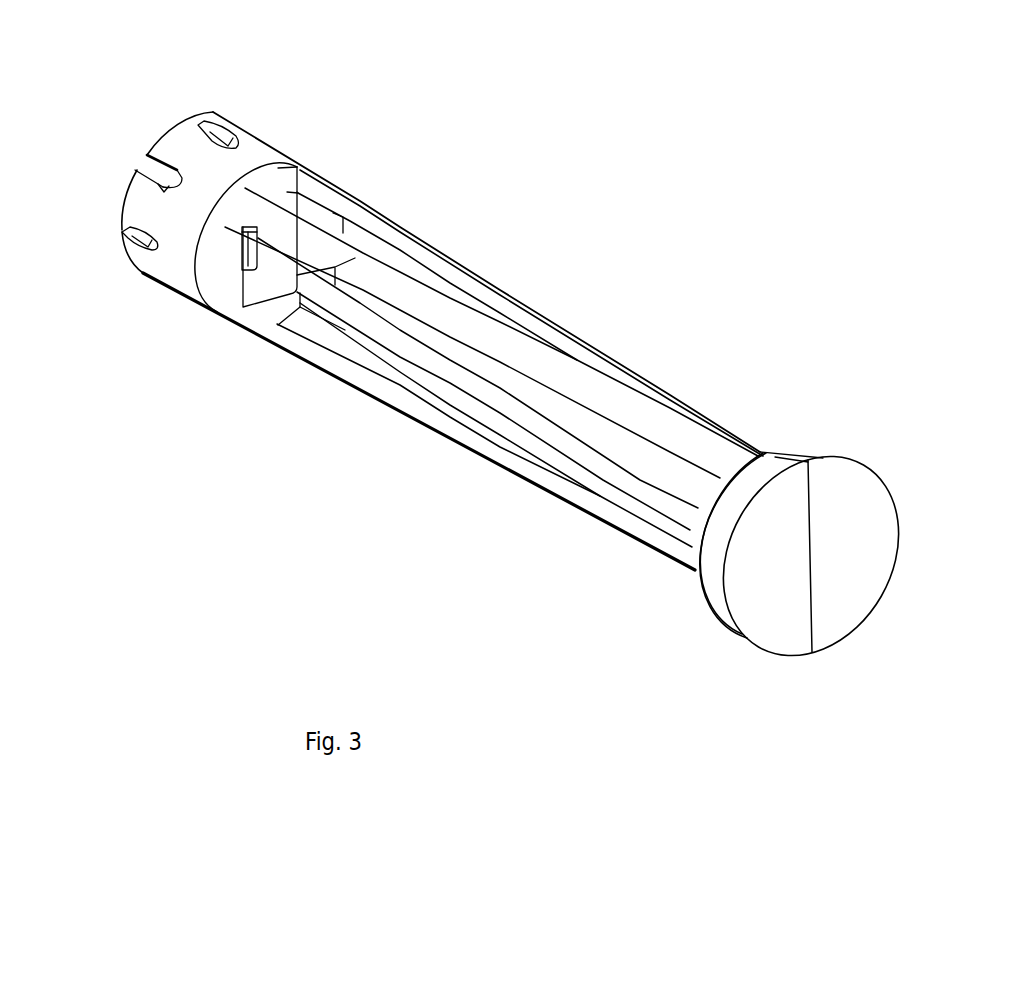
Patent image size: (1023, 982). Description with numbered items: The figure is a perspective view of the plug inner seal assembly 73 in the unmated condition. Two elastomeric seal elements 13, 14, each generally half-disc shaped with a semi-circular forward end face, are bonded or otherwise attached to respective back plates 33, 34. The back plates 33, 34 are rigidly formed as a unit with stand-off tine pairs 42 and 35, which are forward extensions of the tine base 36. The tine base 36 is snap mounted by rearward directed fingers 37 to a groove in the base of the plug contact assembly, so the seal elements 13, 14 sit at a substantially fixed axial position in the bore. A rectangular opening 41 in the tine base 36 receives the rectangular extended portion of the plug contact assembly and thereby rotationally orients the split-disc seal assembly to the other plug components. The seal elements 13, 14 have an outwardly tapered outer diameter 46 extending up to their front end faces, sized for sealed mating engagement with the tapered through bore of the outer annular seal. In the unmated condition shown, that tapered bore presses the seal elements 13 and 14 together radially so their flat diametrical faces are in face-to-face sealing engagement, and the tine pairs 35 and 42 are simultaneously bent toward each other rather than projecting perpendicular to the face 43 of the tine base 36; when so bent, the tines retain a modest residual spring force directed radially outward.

The seal element 13 is at (767, 580).
The seal element 14 is at (858, 563).
The back plate 33 is at (694, 526).
The back plate 34 is at (795, 452).
The stand-off tine pair 35 is at (367, 322).
The tine base 36 is at (258, 150).
The rearward directed fingers 37 is at (177, 147).
The rectangular opening 41 is at (245, 253).
The stand-off tine pair 42 is at (355, 263).
The face of tine base 43 is at (223, 262).
The outwardly tapered outer diameter 46 is at (715, 547).
The plug inner seal assembly 73 is at (388, 450).